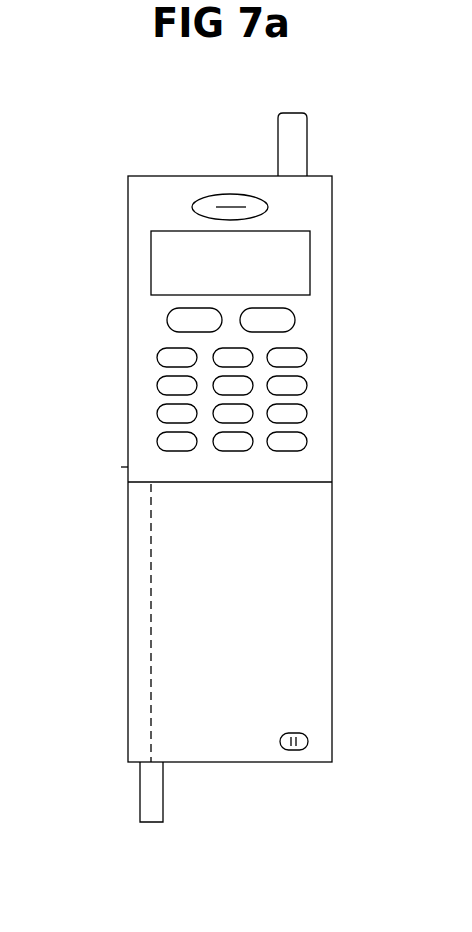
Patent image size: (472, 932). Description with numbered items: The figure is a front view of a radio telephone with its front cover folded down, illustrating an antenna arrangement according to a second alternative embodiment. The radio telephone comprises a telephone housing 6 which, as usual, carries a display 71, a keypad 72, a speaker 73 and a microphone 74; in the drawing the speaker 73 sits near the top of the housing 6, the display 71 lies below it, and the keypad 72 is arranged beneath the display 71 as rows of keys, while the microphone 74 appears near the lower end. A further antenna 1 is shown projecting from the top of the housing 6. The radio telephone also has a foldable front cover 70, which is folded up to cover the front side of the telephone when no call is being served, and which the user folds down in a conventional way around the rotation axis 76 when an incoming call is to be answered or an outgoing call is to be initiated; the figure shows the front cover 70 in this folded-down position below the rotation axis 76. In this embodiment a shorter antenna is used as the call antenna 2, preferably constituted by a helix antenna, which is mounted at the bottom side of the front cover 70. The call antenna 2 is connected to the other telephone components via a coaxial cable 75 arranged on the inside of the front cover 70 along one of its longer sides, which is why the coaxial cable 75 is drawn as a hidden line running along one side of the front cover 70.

The antenna 1 is at (300, 145).
The call antenna 2 is at (137, 805).
The telephone housing 6 is at (329, 207).
The front cover 70 is at (217, 535).
The display 71 is at (305, 261).
The keypad 72 is at (307, 384).
The speaker 73 is at (199, 190).
The microphone 74 is at (318, 741).
The coaxial cable 75 is at (138, 619).
The rotation axis 76 is at (103, 464).